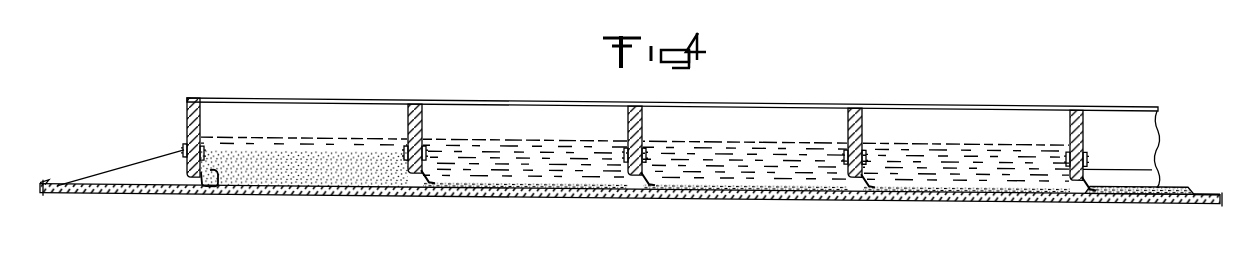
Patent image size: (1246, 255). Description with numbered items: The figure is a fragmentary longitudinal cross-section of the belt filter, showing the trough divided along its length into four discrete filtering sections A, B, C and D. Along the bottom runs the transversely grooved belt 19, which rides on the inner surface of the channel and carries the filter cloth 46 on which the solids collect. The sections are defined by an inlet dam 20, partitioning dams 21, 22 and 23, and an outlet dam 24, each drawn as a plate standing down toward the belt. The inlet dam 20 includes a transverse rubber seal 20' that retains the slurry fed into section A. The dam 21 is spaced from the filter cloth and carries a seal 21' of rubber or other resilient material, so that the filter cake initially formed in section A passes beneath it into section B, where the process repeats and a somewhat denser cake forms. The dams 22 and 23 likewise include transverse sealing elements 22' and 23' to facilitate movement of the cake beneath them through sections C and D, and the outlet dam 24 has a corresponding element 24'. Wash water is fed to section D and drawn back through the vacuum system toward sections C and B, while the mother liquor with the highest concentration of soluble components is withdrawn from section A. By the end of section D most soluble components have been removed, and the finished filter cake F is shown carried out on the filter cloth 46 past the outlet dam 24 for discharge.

The transversely grooved belt 19 is at (1213, 192).
The inlet dam 20 is at (170, 138).
The transverse rubber seal 20' is at (221, 199).
The partitioning dam 21 is at (431, 117).
The seal 21' is at (444, 200).
The partitioning dam 22 is at (643, 123).
The transverse sealing element 22' is at (666, 199).
The partitioning dam 23 is at (869, 124).
The transverse sealing element 23' is at (884, 199).
The outlet dam 24 is at (1089, 124).
The sealing element of outlet dam 24' is at (1103, 204).
The filter cloth 46 is at (1202, 184).
The filter cake F is at (1173, 176).
The filtering section A is at (314, 130).
The filtering section B is at (525, 129).
The filtering section C is at (750, 129).
The filtering section D is at (965, 130).